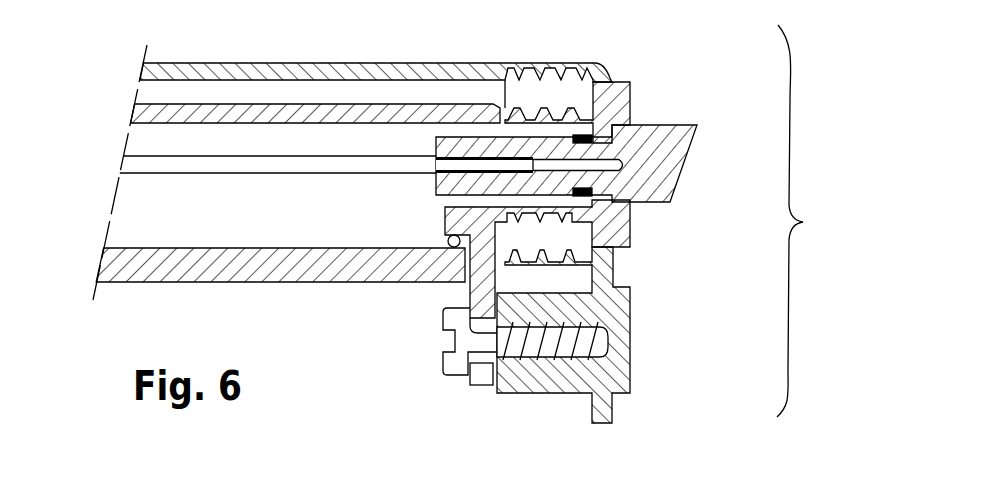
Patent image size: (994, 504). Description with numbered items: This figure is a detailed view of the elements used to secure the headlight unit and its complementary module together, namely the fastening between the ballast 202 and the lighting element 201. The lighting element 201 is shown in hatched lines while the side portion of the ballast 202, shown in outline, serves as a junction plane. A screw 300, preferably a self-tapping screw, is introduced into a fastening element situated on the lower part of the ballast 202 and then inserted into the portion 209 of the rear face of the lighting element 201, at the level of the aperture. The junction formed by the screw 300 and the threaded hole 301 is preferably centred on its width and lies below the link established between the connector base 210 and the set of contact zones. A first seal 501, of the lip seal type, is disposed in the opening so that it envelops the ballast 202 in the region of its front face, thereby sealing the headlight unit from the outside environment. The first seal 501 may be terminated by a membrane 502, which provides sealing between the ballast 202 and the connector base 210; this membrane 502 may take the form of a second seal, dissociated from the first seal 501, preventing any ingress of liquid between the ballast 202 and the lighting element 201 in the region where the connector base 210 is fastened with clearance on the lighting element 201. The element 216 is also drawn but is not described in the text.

The lighting element 201 is at (467, 68).
The ballast 202 is at (143, 110).
The portion of the rear face 209 is at (816, 221).
The connector base 210 is at (622, 162).
The optical fiber 216 is at (287, 163).
The screw 300 is at (450, 363).
The threaded hole 301 is at (597, 365).
The first seal 501 is at (580, 90).
The membrane 502 is at (578, 122).